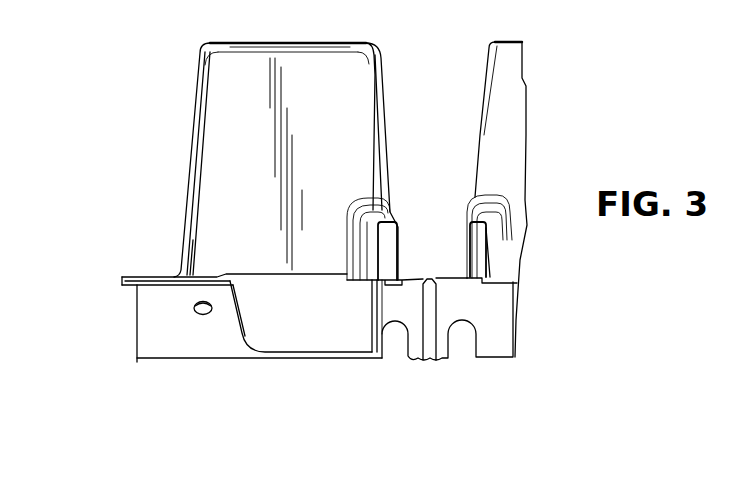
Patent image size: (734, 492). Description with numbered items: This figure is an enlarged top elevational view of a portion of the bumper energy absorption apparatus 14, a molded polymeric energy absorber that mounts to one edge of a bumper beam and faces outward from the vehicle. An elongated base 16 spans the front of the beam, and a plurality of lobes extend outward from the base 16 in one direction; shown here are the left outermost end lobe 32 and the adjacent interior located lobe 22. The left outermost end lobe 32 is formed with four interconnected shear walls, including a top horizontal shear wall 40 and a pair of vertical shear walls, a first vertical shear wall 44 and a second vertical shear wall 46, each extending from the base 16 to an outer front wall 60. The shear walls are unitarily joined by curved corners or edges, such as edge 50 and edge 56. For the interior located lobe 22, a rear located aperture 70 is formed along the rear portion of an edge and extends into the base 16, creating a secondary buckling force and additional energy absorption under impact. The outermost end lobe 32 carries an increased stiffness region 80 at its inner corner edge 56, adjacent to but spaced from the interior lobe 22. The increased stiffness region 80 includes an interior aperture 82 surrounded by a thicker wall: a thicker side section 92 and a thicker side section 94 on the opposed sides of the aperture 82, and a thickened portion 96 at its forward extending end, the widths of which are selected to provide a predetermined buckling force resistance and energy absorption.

The energy absorption apparatus 14 is at (218, 274).
The base 16 is at (126, 276).
The lobe 22 is at (505, 117).
The left outermost end lobe 32 is at (346, 142).
The top horizontal shear wall 40 is at (240, 184).
The first vertical shear wall 44 is at (188, 147).
The second vertical shear wall 46 is at (385, 133).
The corner or edge 50 is at (184, 213).
The corner or edge 56 is at (368, 89).
The outer front wall 60 is at (300, 45).
The rear located aperture 70 is at (475, 250).
The increased stiffness region 80 is at (367, 220).
The interior aperture 82 is at (408, 320).
The thicker side section 92 is at (362, 255).
The thicker side section 94 is at (398, 252).
The thickened portion 96 is at (387, 217).